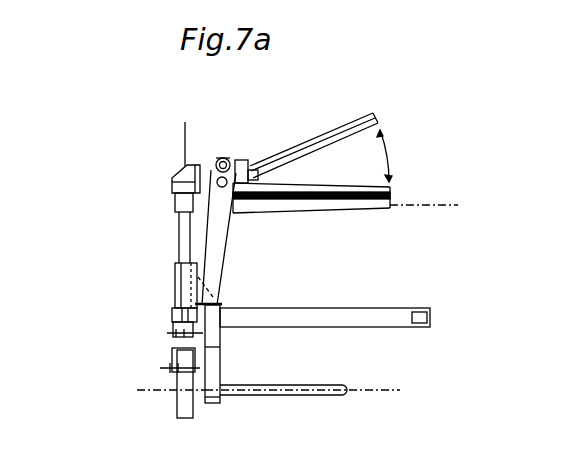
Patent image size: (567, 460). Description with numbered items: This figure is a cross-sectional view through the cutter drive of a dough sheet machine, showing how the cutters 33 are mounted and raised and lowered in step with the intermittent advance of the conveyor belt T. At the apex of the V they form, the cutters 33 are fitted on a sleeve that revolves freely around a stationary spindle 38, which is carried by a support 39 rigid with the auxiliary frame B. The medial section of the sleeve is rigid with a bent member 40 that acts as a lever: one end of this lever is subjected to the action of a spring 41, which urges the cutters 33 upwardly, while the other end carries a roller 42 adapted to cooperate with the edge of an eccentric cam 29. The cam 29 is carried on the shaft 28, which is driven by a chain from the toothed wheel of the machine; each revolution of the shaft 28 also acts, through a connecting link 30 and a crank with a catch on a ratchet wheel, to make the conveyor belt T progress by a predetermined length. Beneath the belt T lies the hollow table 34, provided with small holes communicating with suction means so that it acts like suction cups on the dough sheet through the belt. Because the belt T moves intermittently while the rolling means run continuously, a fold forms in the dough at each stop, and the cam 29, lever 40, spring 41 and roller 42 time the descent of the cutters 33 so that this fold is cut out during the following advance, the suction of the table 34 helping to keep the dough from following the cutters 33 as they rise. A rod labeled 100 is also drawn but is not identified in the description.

The shaft 28 is at (303, 390).
The eccentric cam 29 is at (177, 402).
The connecting link 30 is at (170, 355).
The cutters 33 is at (365, 112).
The hollow table 34 is at (436, 206).
The stationary spindle 38 is at (230, 160).
The support 39 is at (218, 268).
The bent member 40 is at (183, 172).
The spring 41 is at (200, 168).
The roller 42 is at (175, 329).
The piston rod 100 is at (180, 238).
The conveyor belt T is at (393, 194).
The auxiliary frame B is at (388, 307).